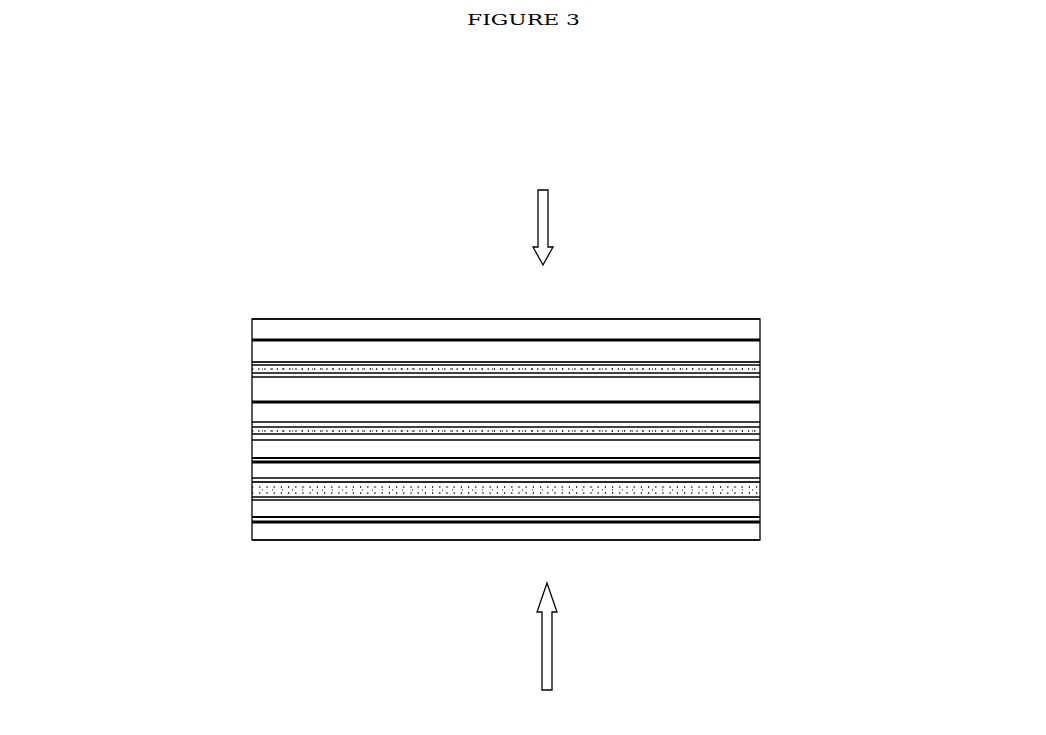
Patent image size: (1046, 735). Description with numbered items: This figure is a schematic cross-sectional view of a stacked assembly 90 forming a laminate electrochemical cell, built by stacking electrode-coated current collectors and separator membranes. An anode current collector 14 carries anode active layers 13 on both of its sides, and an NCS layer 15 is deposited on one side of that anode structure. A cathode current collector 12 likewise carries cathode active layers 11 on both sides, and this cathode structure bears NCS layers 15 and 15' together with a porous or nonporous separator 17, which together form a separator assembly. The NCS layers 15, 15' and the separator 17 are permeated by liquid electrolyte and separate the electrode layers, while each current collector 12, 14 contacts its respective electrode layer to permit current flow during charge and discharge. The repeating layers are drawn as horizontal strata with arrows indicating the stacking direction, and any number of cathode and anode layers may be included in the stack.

The stacked assembly 90 is at (365, 275).
The cathode active layer 11 is at (760, 323).
The cathode current collector 12 is at (252, 400).
The anode active layer 13 is at (760, 385).
The anode current collector 14 is at (252, 340).
The NCS layer 15 is at (438, 459).
The NCS layer 15' is at (413, 350).
The porous separator 17 is at (252, 368).